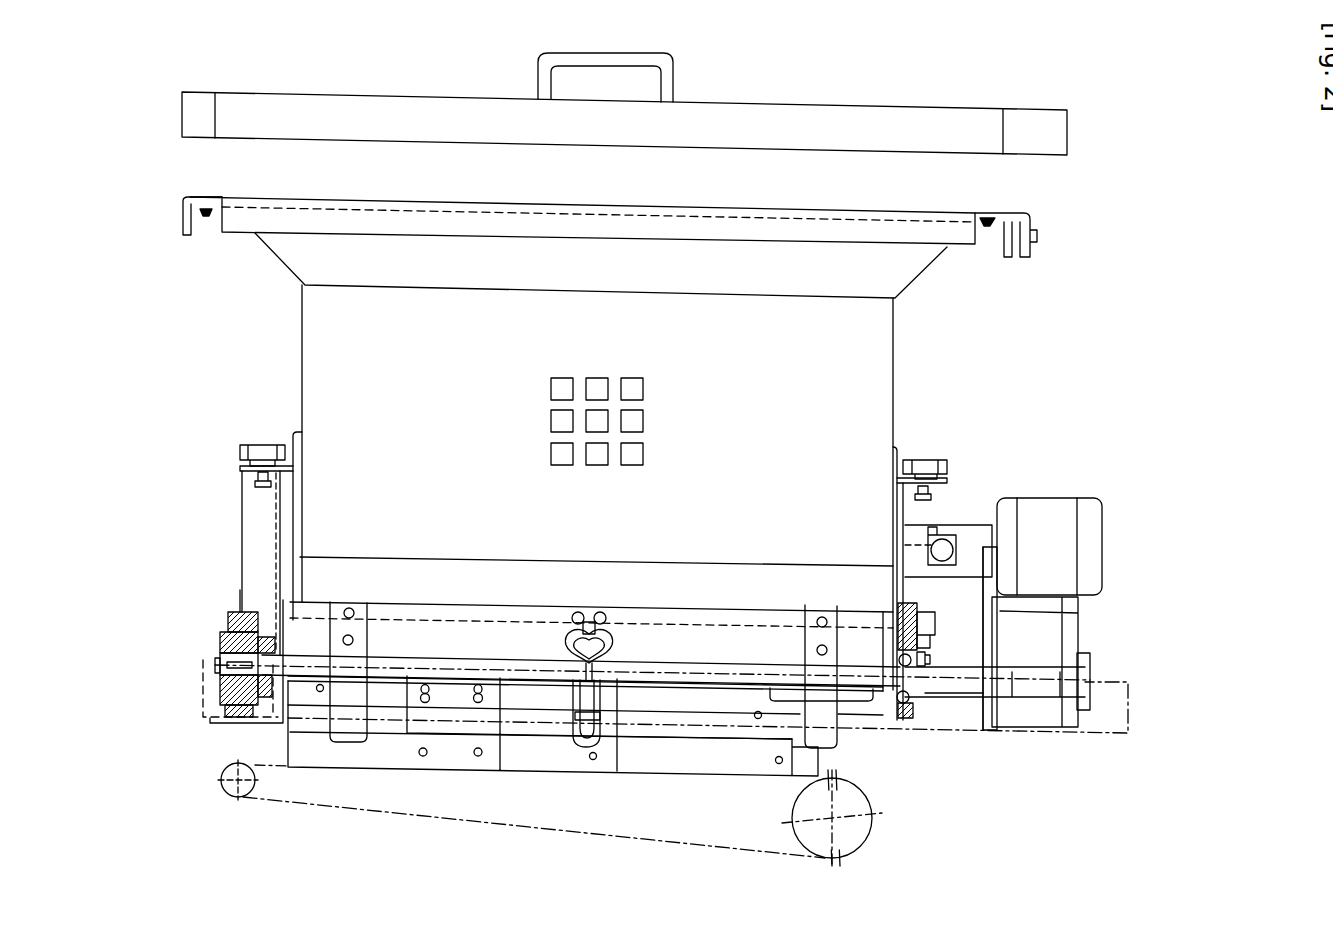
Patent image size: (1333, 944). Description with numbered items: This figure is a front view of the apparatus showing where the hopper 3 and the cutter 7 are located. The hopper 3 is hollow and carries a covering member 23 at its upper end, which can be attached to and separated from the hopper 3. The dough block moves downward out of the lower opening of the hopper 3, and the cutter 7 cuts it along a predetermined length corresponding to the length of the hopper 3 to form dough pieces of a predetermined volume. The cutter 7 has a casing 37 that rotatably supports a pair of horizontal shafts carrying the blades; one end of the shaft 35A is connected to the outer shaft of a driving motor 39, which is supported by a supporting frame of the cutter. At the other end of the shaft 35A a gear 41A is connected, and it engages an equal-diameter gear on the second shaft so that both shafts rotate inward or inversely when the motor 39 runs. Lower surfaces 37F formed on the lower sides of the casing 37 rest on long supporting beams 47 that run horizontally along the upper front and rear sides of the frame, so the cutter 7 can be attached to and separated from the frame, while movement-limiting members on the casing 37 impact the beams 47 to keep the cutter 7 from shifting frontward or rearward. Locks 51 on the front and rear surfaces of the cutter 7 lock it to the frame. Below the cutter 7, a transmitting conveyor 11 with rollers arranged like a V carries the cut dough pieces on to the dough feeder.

The hopper 3 is at (888, 350).
The cutter 7 is at (1125, 481).
The transmitting conveyor 11 is at (410, 818).
The covering member 23 is at (840, 112).
The shaft 35A is at (281, 651).
The casing 37 is at (683, 608).
The lower surface 37F is at (733, 672).
The driving motor 39 is at (1085, 553).
The gear 41A is at (218, 694).
The supporting beam 47 is at (878, 733).
The lock 51 is at (618, 641).